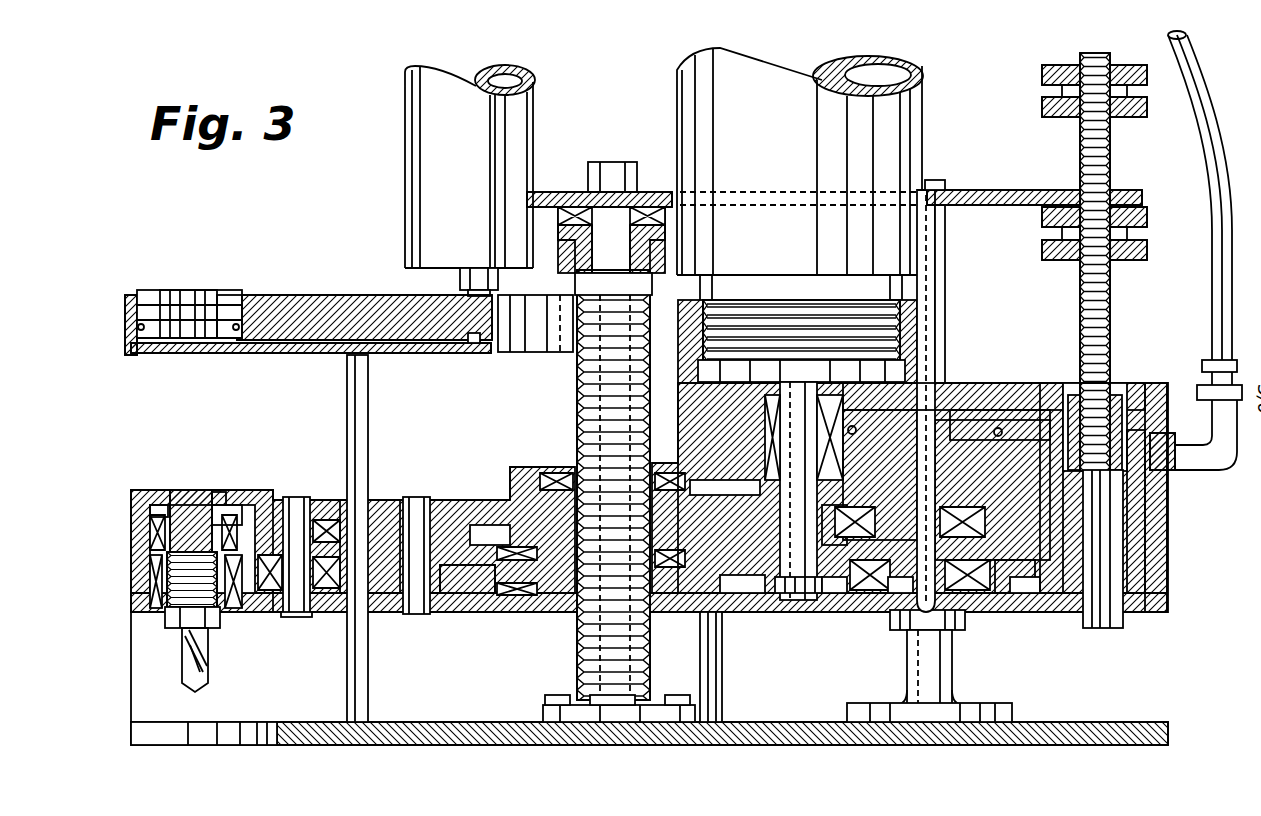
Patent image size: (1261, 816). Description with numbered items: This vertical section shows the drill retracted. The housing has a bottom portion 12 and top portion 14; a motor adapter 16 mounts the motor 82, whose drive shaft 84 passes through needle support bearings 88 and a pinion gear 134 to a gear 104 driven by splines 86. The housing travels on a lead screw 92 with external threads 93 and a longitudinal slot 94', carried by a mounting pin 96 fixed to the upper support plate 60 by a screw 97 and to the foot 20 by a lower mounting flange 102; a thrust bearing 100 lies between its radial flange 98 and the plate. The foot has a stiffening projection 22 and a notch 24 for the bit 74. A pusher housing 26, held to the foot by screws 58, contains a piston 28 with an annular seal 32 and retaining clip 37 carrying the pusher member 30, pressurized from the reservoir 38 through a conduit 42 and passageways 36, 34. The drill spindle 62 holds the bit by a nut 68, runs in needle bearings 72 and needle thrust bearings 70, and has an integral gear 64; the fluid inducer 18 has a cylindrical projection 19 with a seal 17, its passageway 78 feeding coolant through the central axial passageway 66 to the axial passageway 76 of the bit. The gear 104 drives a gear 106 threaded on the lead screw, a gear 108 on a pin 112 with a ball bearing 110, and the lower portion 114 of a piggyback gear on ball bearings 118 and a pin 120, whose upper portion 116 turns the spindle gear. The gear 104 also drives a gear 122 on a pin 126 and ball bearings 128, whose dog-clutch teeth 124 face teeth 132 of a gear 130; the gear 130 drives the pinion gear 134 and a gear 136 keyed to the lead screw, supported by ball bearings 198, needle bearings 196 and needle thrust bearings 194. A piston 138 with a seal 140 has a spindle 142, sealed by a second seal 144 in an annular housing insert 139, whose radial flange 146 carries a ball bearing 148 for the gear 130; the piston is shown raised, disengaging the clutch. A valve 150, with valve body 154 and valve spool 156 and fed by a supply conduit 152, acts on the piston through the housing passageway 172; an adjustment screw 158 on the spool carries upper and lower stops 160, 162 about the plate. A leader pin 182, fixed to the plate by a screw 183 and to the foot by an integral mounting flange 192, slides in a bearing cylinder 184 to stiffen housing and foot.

The housing 12 is at (1150, 605).
The frame 14 is at (322, 500).
The shaft 16 is at (938, 345).
The spacer 17 is at (225, 515).
The end block 18 is at (131, 496).
The cap 19 is at (168, 498).
The base plate 20 is at (1120, 745).
The side wall 22 is at (131, 700).
The base member 24 is at (280, 745).
The arm 26 is at (290, 295).
The bearing housing 28 is at (131, 308).
The bearing 30 is at (185, 290).
The retainer 32 is at (131, 332).
The plate 34 is at (275, 350).
The fastener 36 is at (475, 345).
The bearing race 37 is at (228, 292).
The motor 38 is at (488, 176).
The coupling nut 42 is at (460, 285).
The support rod 58 is at (350, 380).
The mounting plate 60 is at (555, 192).
The threaded shaft 62 is at (220, 590).
The bearing 64 is at (150, 540).
The spring 66 is at (152, 565).
The nut 68 is at (165, 615).
The collar 70 is at (150, 518).
The spring 72 is at (150, 590).
The tool bit 74 is at (185, 660).
The flute 76 is at (205, 655).
The washer 78 is at (195, 490).
The motor 82 is at (785, 159).
The spindle 84 is at (787, 487).
The nut 86 is at (790, 603).
The flange 88 is at (775, 408).
The screw end 92 is at (605, 705).
The lead screw 93 is at (577, 655).
The bolt 94' is at (535, 340).
The bearing block 96 is at (600, 252).
The nut 97 is at (612, 162).
The flange 98 is at (565, 232).
The bearing 100 is at (648, 207).
The base nut 102 is at (545, 722).
The spacer 104 is at (840, 605).
The bearing 106 is at (673, 600).
The bushing 108 is at (450, 613).
The bottom plate 110 is at (425, 613).
The guide post 112 is at (415, 498).
The bearing 114 is at (325, 593).
The frame member 116 is at (385, 500).
The guide post 118 is at (290, 498).
The washer 120 is at (300, 617).
The bearing 122 is at (858, 612).
The retainer 124 is at (1010, 610).
The housing block 126 is at (945, 383).
The spacer 128 is at (888, 612).
The sleeve 130 is at (840, 520).
The nut 132 is at (1020, 610).
The support block 134 is at (765, 513).
The step block 136 is at (492, 500).
The cover 138 is at (1000, 400).
The bracket 139 is at (937, 305).
The spring 140 is at (850, 430).
The partition wall 142 is at (1025, 430).
The piston 144 is at (960, 480).
The bearing 146 is at (970, 610).
The piston 148 is at (875, 530).
The housing wall 150 is at (1168, 545).
The fitting 152 is at (1178, 470).
The liner 154 is at (1150, 565).
The shaft 156 is at (1120, 630).
The adjusting screw 158 is at (1112, 150).
The lock nut 160 is at (1042, 100).
The lock nut 162 is at (1045, 230).
The bore 172 is at (1060, 383).
The pedestal 182 is at (915, 669).
The plate 183 is at (935, 190).
The flange 184 is at (958, 628).
The foot 192 is at (850, 722).
The bearing 194 is at (550, 473).
The bushing 196 is at (735, 605).
The bearing 198 is at (540, 593).